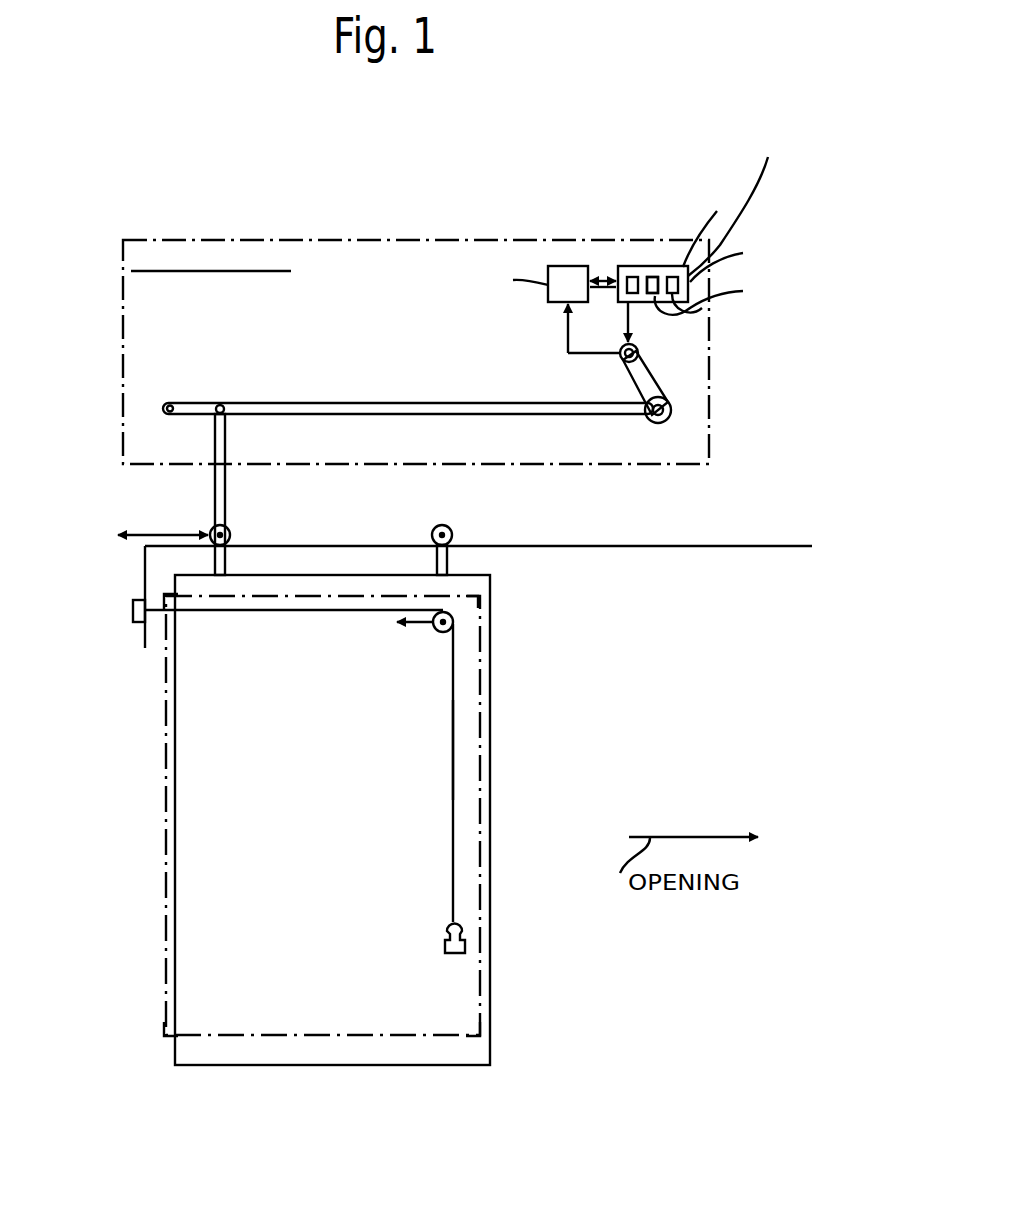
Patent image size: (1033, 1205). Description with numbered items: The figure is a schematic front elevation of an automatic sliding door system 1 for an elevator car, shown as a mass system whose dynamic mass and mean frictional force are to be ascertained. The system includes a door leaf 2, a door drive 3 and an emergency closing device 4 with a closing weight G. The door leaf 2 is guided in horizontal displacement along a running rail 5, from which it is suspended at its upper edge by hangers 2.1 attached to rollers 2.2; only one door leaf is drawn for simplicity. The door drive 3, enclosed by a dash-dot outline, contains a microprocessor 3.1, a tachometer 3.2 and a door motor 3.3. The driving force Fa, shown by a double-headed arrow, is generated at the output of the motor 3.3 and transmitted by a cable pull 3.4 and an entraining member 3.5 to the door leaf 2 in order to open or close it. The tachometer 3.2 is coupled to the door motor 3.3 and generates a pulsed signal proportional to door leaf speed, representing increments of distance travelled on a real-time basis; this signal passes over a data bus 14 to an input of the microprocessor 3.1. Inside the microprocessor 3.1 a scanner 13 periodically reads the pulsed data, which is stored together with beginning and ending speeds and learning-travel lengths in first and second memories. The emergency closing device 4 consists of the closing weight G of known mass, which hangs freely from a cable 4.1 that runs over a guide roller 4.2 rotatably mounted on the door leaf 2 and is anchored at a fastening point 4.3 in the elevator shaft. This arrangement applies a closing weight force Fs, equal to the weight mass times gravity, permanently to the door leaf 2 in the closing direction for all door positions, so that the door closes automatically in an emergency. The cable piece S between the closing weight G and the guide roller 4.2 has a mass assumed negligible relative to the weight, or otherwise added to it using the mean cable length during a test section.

The automatic sliding door system 1 is at (738, 637).
The door leaf 2 is at (400, 797).
The door drive 3 is at (226, 234).
The microprocessor 3.1 is at (633, 266).
The tachometer 3.2 is at (572, 266).
The door motor 3.3 is at (640, 346).
The cable pull 3.4 is at (372, 403).
The entraining member 3.5 is at (222, 403).
The emergency closing device 4 is at (166, 870).
The cable 4.1 is at (453, 698).
The guide roller 4.2 is at (455, 612).
The fastening point 4.3 is at (133, 611).
The running rail 5 is at (740, 546).
The scanner 13 is at (648, 277).
The data bus 14 is at (603, 276).
The hangers 2.1 is at (222, 565).
The rollers 2.2 is at (452, 527).
The cable piece S is at (455, 750).
The closing weight G is at (466, 942).
The driving force Fa is at (181, 528).
The closing weight force Fs is at (425, 632).